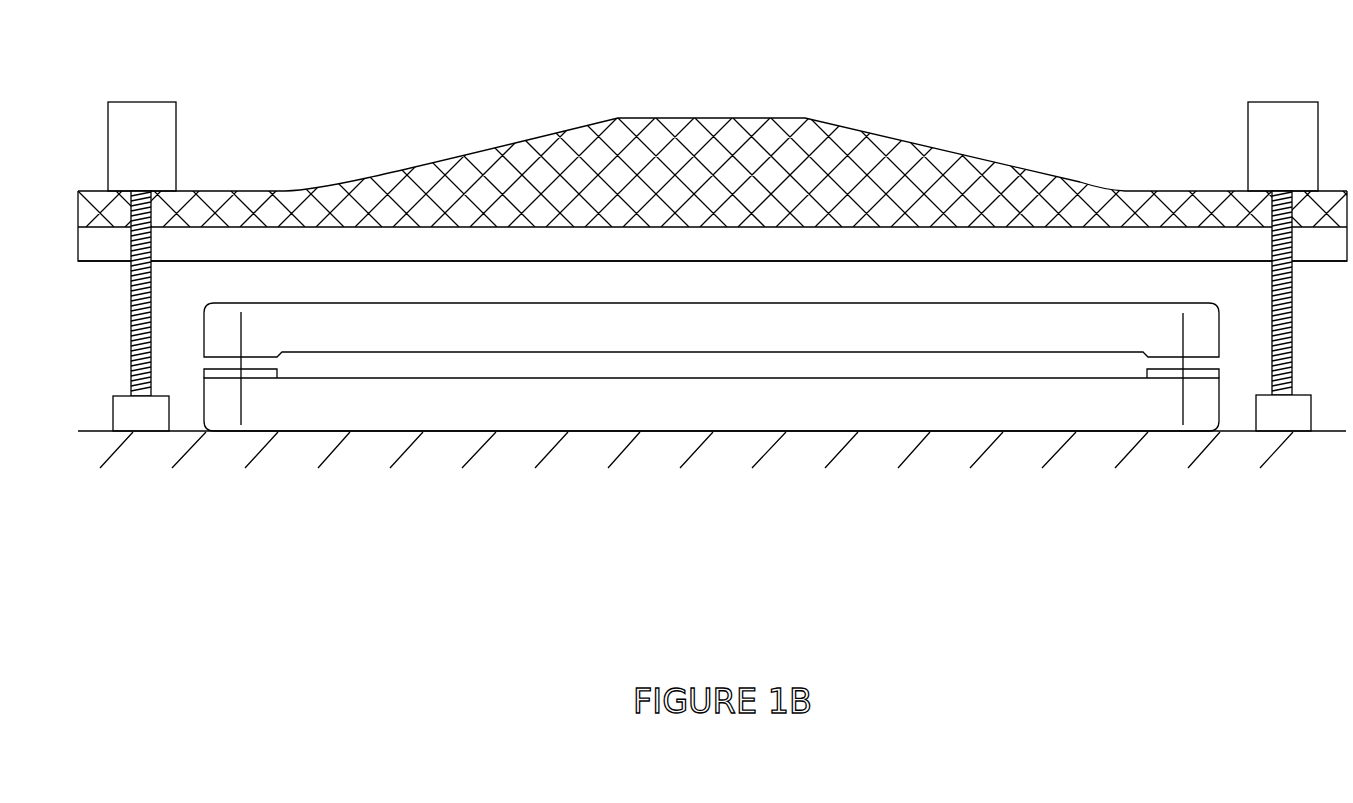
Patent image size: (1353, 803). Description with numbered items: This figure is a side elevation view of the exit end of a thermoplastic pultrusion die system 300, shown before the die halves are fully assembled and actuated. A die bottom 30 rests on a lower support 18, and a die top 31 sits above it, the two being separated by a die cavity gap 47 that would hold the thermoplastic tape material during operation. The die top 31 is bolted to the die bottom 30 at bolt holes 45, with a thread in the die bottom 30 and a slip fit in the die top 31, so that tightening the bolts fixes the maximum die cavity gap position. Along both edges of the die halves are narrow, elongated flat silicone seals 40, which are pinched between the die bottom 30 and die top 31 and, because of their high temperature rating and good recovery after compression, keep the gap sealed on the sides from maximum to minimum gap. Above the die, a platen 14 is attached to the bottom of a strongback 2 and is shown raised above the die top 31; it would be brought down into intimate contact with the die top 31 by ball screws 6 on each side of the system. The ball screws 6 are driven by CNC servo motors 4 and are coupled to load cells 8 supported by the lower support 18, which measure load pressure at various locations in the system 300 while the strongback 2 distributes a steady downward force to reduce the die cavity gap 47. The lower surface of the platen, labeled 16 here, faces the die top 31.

The strongback 2 is at (866, 155).
The CNC servo motor 4 is at (182, 117).
The ball screw 6 is at (155, 350).
The load cell 8 is at (143, 428).
The platen 14 is at (712, 227).
The lower surface of plate 16 is at (264, 265).
The lower support 18 is at (712, 449).
The die bottom 30 is at (512, 408).
The die top 31 is at (815, 328).
The silicone seal 40 is at (258, 380).
The bolt hole 45 is at (236, 331).
The die cavity gap 47 is at (963, 368).
The thermoplastic pultrusion die system 300 is at (397, 562).